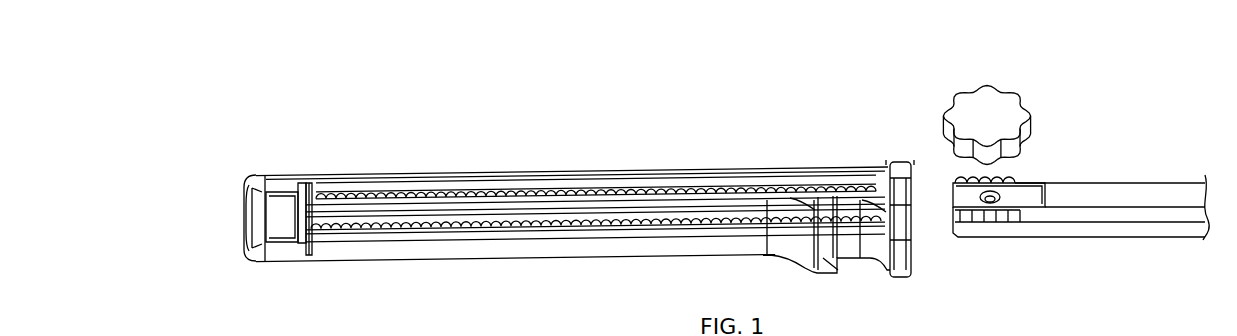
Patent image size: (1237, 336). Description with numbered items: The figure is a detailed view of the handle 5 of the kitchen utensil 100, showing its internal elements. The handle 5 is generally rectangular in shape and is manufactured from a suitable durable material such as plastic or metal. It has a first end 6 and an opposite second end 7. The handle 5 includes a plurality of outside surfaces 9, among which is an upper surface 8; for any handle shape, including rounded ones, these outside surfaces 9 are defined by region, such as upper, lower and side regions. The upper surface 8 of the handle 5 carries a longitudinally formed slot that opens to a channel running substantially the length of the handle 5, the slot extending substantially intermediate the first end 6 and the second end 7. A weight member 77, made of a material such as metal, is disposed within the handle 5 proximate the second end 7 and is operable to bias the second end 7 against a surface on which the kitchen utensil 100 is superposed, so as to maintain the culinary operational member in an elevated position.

The kitchen utensil 100 is at (1130, 49).
The handle 5 is at (554, 170).
The first end 6 is at (897, 156).
The second end 7 is at (253, 168).
The weight member 77 is at (284, 190).
The upper surface 8 is at (332, 182).
The outside surfaces 9 is at (300, 182).